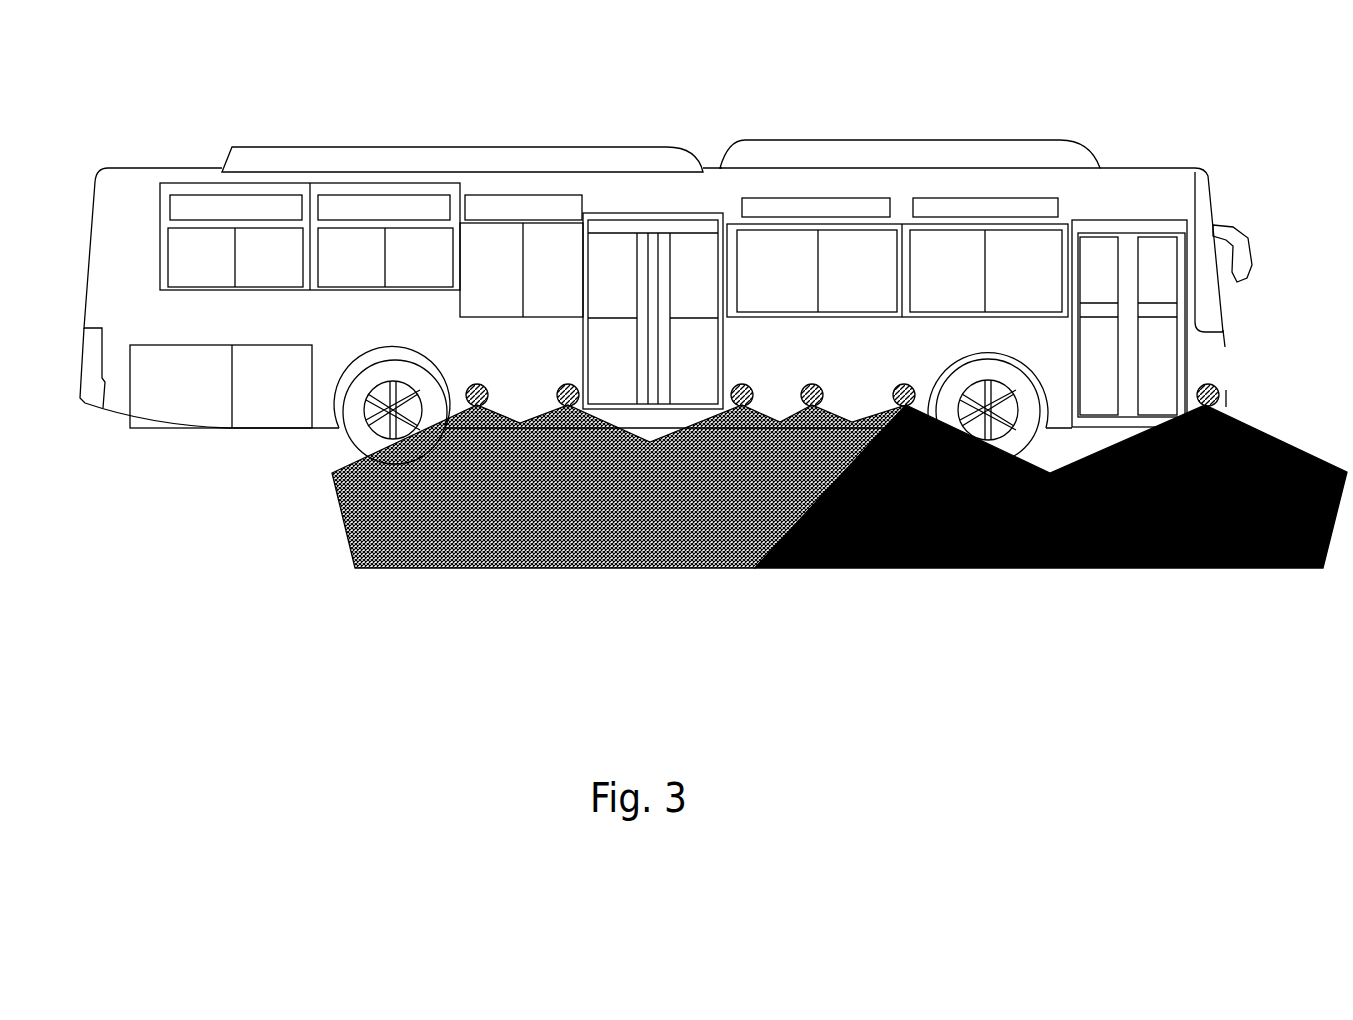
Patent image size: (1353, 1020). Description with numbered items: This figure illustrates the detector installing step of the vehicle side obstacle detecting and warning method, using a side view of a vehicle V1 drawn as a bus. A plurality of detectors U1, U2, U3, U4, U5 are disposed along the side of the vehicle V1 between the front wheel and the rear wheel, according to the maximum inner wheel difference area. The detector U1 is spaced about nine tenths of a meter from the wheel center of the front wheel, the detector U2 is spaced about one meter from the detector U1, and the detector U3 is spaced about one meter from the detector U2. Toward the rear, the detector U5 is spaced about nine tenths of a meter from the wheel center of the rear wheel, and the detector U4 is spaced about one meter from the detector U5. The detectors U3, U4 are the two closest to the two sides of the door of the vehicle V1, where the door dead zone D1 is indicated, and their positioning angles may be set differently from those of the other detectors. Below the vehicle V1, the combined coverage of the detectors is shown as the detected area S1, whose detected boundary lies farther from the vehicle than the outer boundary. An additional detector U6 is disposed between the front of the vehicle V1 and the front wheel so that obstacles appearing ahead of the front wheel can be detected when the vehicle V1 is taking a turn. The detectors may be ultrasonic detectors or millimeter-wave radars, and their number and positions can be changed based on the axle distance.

The vehicle V1 is at (330, 162).
The door dead zone D1 is at (653, 212).
The detector U1 is at (901, 379).
The detector U2 is at (811, 379).
The detector U3 is at (750, 379).
The detector U4 is at (576, 379).
The detector U5 is at (485, 379).
The detector U6 is at (1211, 379).
The detected area S1 is at (1058, 570).